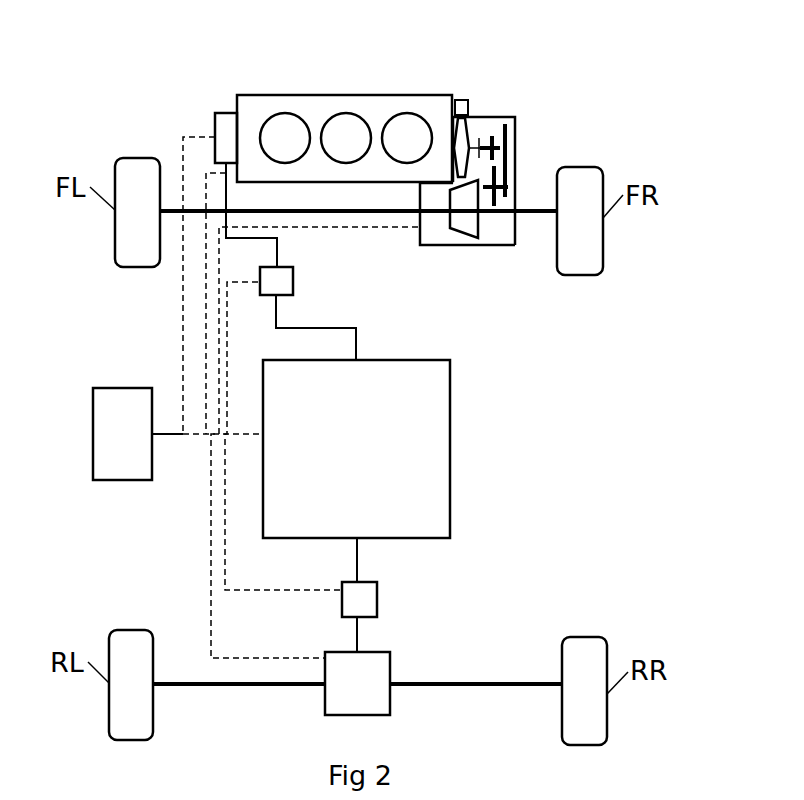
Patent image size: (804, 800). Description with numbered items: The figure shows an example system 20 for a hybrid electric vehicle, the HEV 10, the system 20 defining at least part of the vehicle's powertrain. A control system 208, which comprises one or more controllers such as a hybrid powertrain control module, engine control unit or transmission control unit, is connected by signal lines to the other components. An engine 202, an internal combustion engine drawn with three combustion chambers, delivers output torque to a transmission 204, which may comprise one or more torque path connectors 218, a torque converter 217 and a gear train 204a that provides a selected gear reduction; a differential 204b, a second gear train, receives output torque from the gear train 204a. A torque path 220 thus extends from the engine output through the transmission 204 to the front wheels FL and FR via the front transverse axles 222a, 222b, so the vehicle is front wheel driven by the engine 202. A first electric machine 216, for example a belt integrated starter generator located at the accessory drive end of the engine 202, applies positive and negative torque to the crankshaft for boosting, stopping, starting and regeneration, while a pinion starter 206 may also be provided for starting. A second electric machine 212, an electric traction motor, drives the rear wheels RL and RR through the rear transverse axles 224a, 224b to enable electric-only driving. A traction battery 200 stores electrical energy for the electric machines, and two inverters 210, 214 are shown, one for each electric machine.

The HEV 10 is at (628, 34).
The system 20 is at (580, 106).
The traction battery 200 is at (450, 450).
The engine 202 is at (313, 95).
The transmission 204 is at (528, 131).
The gear train 204a is at (503, 151).
The differential 204b is at (480, 228).
The pinion starter 206 is at (463, 100).
The control system 208 is at (93, 432).
The inverter 210 is at (377, 600).
The second electric machine 212 is at (390, 705).
The inverter 214 is at (293, 281).
The first electric machine 216 is at (228, 112).
The torque converter 217 is at (468, 127).
The torque path connectors 218 is at (495, 128).
The torque path 220 is at (473, 240).
The first axle 222a is at (173, 215).
The first axle 222b is at (540, 215).
The rear transverse axle 224a is at (195, 682).
The rear transverse axle 224b is at (492, 682).